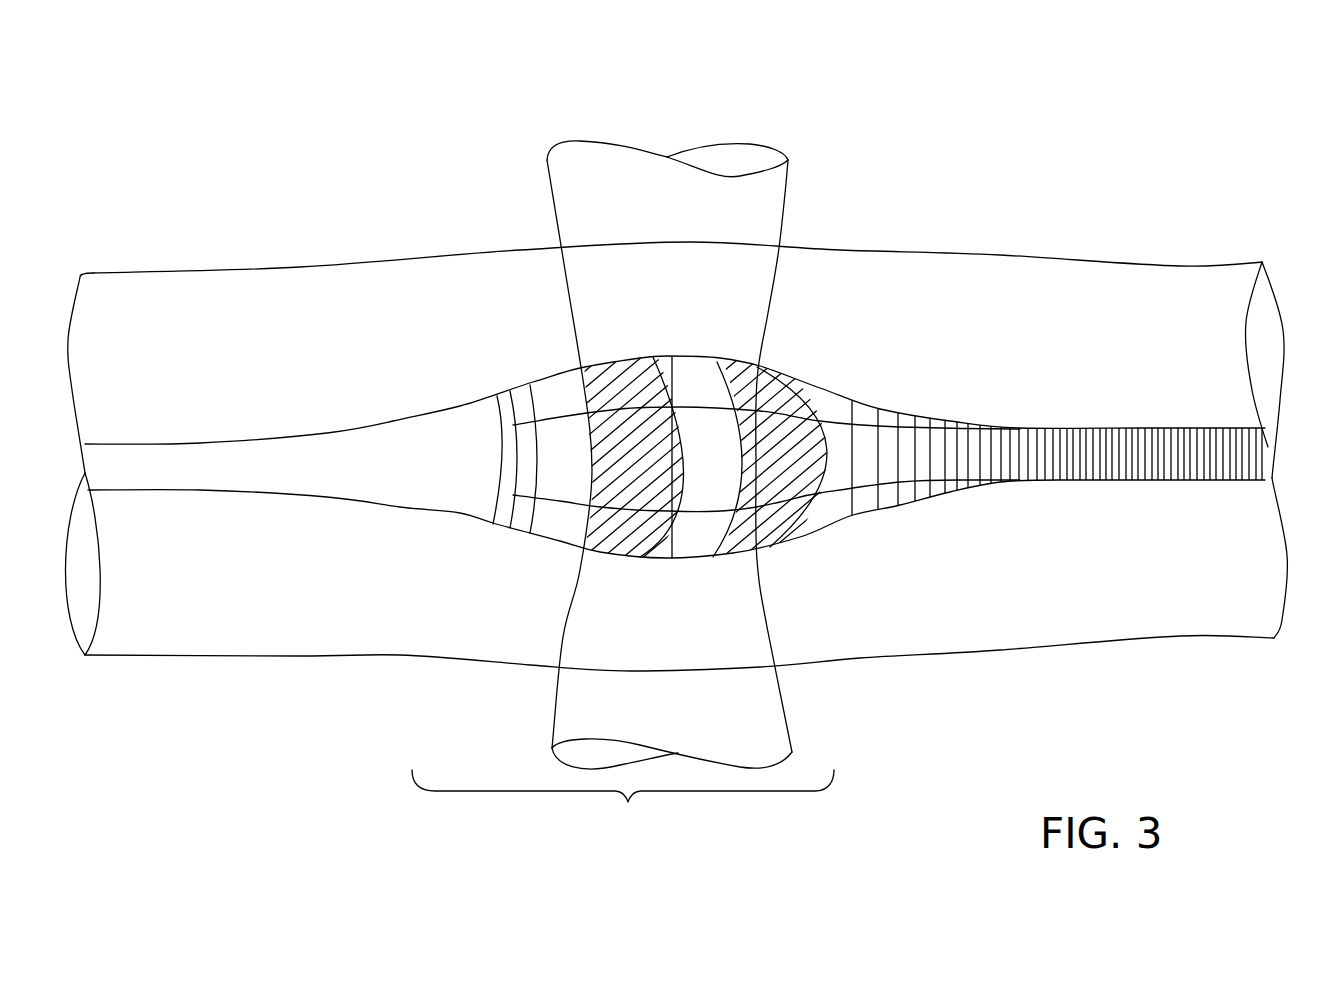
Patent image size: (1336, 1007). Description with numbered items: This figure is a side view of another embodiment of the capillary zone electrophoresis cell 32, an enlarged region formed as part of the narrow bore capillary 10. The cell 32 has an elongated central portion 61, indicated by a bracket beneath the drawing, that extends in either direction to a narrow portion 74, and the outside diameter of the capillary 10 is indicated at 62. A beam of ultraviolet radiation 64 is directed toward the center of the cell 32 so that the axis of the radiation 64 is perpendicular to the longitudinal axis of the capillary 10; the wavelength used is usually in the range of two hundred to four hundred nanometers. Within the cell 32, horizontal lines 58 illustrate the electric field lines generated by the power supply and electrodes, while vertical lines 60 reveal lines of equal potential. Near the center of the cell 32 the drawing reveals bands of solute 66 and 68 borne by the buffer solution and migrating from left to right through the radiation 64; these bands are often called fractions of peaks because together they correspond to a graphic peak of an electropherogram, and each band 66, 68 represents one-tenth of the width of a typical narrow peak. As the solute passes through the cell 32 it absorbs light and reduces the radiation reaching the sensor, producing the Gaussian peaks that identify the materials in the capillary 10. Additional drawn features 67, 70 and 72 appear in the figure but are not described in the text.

The narrow bore capillary 10 is at (222, 210).
The CZE cell 32 is at (1024, 428).
The horizontal lines 58 is at (867, 477).
The vertical lines 60 is at (848, 452).
The elongated central portion 61 is at (623, 807).
The outside diameter of capillary 62 is at (1215, 262).
The beam of ultraviolet radiation 64 is at (735, 145).
The band of solute 66 is at (760, 542).
The fusion boundary 67 is at (700, 357).
The band of solute 68 is at (602, 357).
The cladding layers 70 is at (548, 478).
The tapered cladding 72 is at (327, 435).
The narrow portion 74 is at (1075, 482).